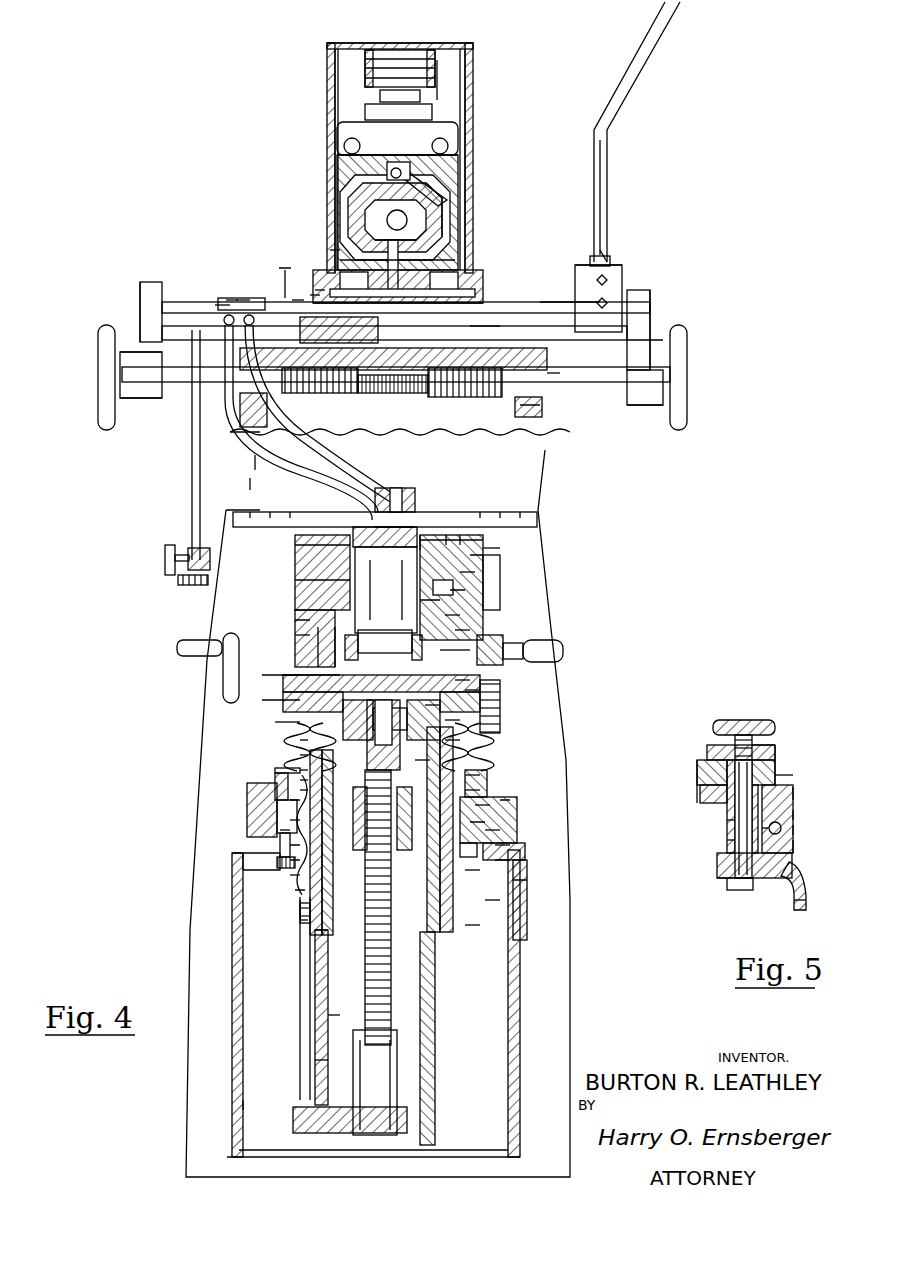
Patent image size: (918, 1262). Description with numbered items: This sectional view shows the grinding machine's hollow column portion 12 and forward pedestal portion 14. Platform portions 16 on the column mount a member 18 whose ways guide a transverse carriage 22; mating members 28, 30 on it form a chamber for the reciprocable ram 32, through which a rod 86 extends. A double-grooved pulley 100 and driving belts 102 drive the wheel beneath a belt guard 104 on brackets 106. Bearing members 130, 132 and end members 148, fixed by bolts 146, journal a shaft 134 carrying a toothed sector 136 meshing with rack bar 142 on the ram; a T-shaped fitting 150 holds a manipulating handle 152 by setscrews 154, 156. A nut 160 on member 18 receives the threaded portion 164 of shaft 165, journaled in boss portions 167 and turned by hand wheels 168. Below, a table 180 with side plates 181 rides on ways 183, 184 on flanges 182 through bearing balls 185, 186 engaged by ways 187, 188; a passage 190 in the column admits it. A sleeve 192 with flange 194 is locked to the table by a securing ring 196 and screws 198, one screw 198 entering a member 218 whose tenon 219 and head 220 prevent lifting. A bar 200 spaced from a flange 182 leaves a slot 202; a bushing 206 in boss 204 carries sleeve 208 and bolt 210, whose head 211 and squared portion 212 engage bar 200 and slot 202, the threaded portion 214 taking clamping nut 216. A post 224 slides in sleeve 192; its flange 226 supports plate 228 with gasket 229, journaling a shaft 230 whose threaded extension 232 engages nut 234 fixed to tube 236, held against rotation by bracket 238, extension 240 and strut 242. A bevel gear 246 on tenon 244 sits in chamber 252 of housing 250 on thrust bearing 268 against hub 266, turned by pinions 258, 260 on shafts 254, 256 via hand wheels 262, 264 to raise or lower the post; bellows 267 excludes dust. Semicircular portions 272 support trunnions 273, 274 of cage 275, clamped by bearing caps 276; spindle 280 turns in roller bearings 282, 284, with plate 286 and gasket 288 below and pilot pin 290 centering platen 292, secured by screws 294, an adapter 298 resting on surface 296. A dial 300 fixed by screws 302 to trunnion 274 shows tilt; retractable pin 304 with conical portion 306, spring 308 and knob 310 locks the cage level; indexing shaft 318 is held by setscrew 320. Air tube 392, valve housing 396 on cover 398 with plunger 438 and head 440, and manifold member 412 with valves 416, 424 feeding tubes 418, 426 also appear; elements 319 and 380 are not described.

In FIG. 4, the hollow column portion 12 is at (548, 450).
In FIG. 4, the pedestal portion 14 is at (232, 1068).
In FIG. 5, the pedestal portion 14 is at (800, 880).
In FIG. 4, the platform portions 16 is at (250, 442).
In FIG. 4, the member 18 is at (530, 358).
In FIG. 4, the carriage 22 is at (490, 324).
In FIG. 4, the member 28 is at (405, 230).
In FIG. 4, the member 30 is at (412, 168).
In FIG. 4, the ram 32 is at (412, 185).
In FIG. 4, the rod or shaft 86 is at (412, 198).
In FIG. 4, the double grooved pulley 100 is at (402, 56).
In FIG. 4, the driving belts 102 is at (442, 98).
In FIG. 4, the belt guard 104 is at (355, 44).
In FIG. 4, the brackets 106 is at (330, 110).
In FIG. 4, the bearing member 130 is at (338, 255).
In FIG. 4, the bearing member 132 is at (480, 295).
In FIG. 4, the shaft 134 is at (555, 312).
In FIG. 4, the toothed sector 136 is at (395, 265).
In FIG. 4, the rack bar 142 is at (405, 222).
In FIG. 4, the bolts 146 is at (655, 352).
In FIG. 4, the end members 148 is at (651, 332).
In FIG. 4, the T-shaped fitting 150 is at (622, 276).
In FIG. 4, the manipulating handle 152 is at (613, 125).
In FIG. 4, the setscrew 154 is at (622, 296).
In FIG. 4, the setscrew 156 is at (606, 250).
In FIG. 4, the nut 160 is at (320, 393).
In FIG. 4, the threaded portion 164 is at (440, 397).
In FIG. 4, the transverse shaft 165 is at (563, 380).
In FIG. 4, the boss portions 167 is at (128, 400).
In FIG. 4, the hand wheels 168 is at (688, 375).
In FIG. 4, the table 180 is at (300, 800).
In FIG. 5, the table 180 is at (780, 775).
In FIG. 4, the side plates 181 is at (300, 845).
In FIG. 5, the side plates 181 is at (790, 795).
In FIG. 4, the flanges 182 is at (305, 890).
In FIG. 5, the flanges 182 is at (795, 900).
In FIG. 4, the longitudinal way 183 is at (300, 875).
In FIG. 4, the longitudinal way 184 is at (470, 870).
In FIG. 5, the longitudinal way 184 is at (792, 845).
In FIG. 4, the bearing balls 185 is at (290, 830).
In FIG. 4, the bearing balls 186 is at (500, 845).
In FIG. 5, the bearing balls 186 is at (782, 828).
In FIG. 4, the way 187 is at (300, 820).
In FIG. 4, the way 188 is at (490, 830).
In FIG. 5, the way 188 is at (792, 815).
In FIG. 4, the opening or passage 190 is at (300, 860).
In FIG. 4, the cylindrical sleeve 192 is at (437, 935).
In FIG. 4, the circular flange 194 is at (480, 805).
In FIG. 4, the securing ring 196 is at (470, 790).
In FIG. 5, the securing ring 196 is at (700, 765).
In FIG. 4, the screw 198 is at (310, 790).
In FIG. 4, the bar 200 is at (470, 925).
In FIG. 5, the bar 200 is at (725, 883).
In FIG. 4, the slot 202 is at (490, 900).
In FIG. 5, the boss 204 is at (775, 760).
In FIG. 5, the bushing 206 is at (765, 745).
In FIG. 5, the sleeve 208 is at (730, 825).
In FIG. 5, the bolt 210 is at (728, 843).
In FIG. 5, the head portion 211 is at (740, 890).
In FIG. 5, the squared portion 212 is at (790, 860).
In FIG. 5, the threaded portion 214 is at (745, 722).
In FIG. 5, the clamping nut 216 is at (752, 722).
In FIG. 4, the member 218 is at (315, 935).
In FIG. 4, the tenon 219 is at (300, 920).
In FIG. 4, the head 220 is at (300, 915).
In FIG. 4, the tubular post 224 is at (335, 1020).
In FIG. 4, the inwardly extending flange 226 is at (305, 770).
In FIG. 4, the plate 228 is at (300, 755).
In FIG. 4, the sealing gasket 229 is at (310, 780).
In FIG. 4, the shaft 230 is at (470, 775).
In FIG. 4, the threaded extension 232 is at (367, 970).
In FIG. 4, the nut 234 is at (330, 950).
In FIG. 4, the tube 236 is at (355, 1000).
In FIG. 4, the bracket 238 is at (350, 1110).
In FIG. 4, the extension 240 is at (232, 1105).
In FIG. 4, the strut 242 is at (320, 1070).
In FIG. 4, the tenon 244 is at (300, 740).
In FIG. 4, the bevel gear 246 is at (400, 755).
In FIG. 4, the housing 250 is at (300, 635).
In FIG. 4, the chamber 252 is at (270, 675).
In FIG. 4, the shaft 254 is at (275, 722).
In FIG. 4, the shaft 256 is at (430, 705).
In FIG. 4, the pinion portion 258 is at (265, 700).
In FIG. 4, the pinion portion 260 is at (450, 720).
In FIG. 4, the hand wheel 262 is at (190, 648).
In FIG. 4, the hand wheel 264 is at (460, 680).
In FIG. 4, the hub portion 266 is at (470, 690).
In FIG. 4, the bellows-like member 267 is at (420, 760).
In FIG. 4, the thrust bearing 268 is at (450, 740).
In FIG. 4, the semicircular portions 272 is at (300, 620).
In FIG. 4, the trunnion 273 is at (320, 580).
In FIG. 4, the trunnion 274 is at (470, 520).
In FIG. 4, the cage 275 is at (318, 640).
In FIG. 4, the bearing caps 276 is at (480, 540).
In FIG. 4, the spindle 280 is at (370, 600).
In FIG. 4, the tapered roller bearing 282 is at (425, 535).
In FIG. 4, the tapered roller bearing 284 is at (460, 650).
In FIG. 4, the plate 286 is at (223, 668).
In FIG. 4, the sealing gasket 288 is at (310, 650).
In FIG. 4, the pilot pin 290 is at (400, 466).
In FIG. 4, the platen 292 is at (240, 510).
In FIG. 4, the screws 294 is at (340, 480).
In FIG. 4, the upper surface 296 is at (320, 510).
In FIG. 4, the adapter 298 is at (400, 490).
In FIG. 4, the dial 300 is at (485, 548).
In FIG. 4, the screws 302 is at (478, 556).
In FIG. 4, the retractable pin 304 is at (562, 652).
In FIG. 4, the frusto-conical portion 306 is at (450, 615).
In FIG. 4, the coil spring 308 is at (460, 630).
In FIG. 4, the knob 310 is at (515, 660).
In FIG. 4, the shaft 318 is at (465, 535).
In FIG. 4, the washer 319 is at (468, 572).
In FIG. 4, the setscrew 320 is at (455, 530).
In FIG. 4, the adjusting knob 380 is at (142, 563).
In FIG. 4, the air supply tube 392 is at (190, 528).
In FIG. 4, the valve housing 396 is at (320, 290).
In FIG. 4, the sheet metal cover 398 is at (290, 272).
In FIG. 4, the manifold member 412 is at (222, 305).
In FIG. 4, the regulating valve 416 is at (243, 300).
In FIG. 4, the air conveying tube 418 is at (260, 460).
In FIG. 4, the regulating valve 424 is at (232, 300).
In FIG. 4, the tube 426 is at (255, 480).
In FIG. 4, the plunger rod 438 is at (315, 295).
In FIG. 4, the head 440 is at (298, 300).